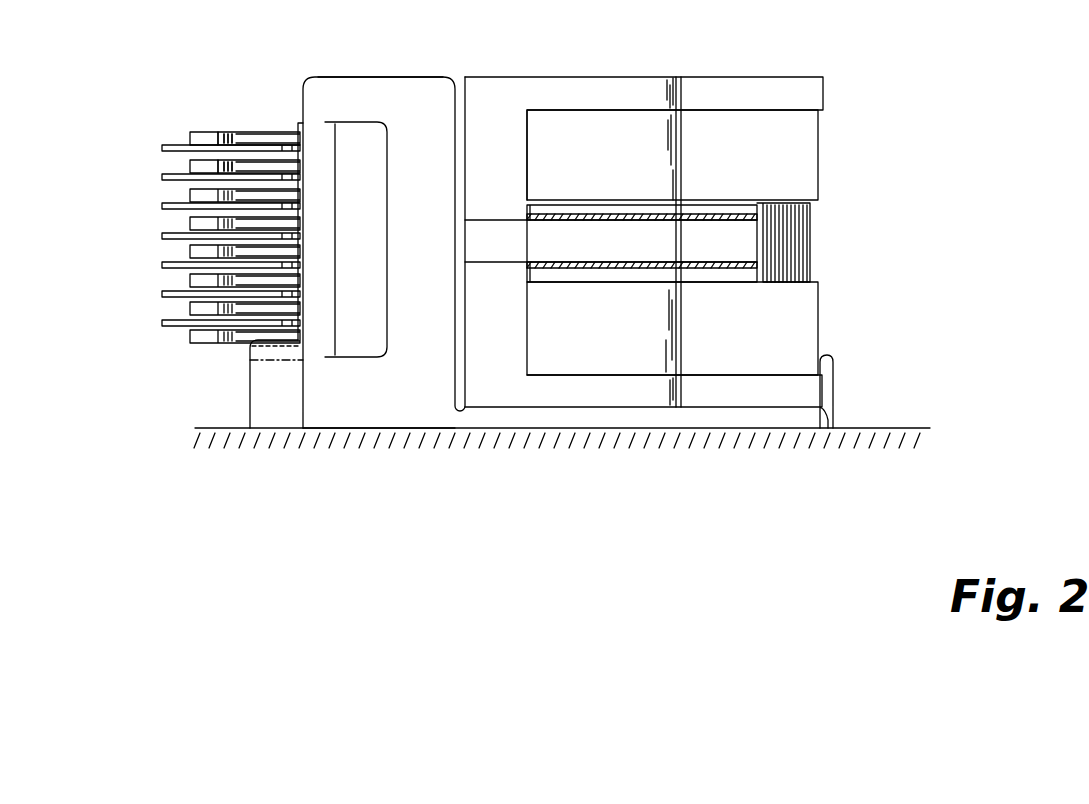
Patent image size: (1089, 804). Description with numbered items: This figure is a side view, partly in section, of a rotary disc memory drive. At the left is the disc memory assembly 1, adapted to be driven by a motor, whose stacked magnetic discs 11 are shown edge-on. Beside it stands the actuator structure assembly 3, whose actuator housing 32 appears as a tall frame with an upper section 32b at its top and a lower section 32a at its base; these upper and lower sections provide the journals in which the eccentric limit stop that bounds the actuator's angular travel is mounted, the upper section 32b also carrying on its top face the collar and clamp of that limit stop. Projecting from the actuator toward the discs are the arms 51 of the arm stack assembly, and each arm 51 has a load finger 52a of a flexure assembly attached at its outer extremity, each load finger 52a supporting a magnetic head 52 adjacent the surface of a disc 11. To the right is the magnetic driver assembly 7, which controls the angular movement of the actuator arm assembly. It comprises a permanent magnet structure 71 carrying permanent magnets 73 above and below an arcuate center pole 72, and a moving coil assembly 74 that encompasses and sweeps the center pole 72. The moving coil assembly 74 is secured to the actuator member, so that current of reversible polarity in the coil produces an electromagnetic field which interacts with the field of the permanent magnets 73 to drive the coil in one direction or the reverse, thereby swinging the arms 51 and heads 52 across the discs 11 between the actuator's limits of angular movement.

The disc memory assembly 1 is at (178, 199).
The actuator structure assembly 3 is at (379, 279).
The magnetic driver assembly 7 is at (682, 279).
The disc 11 is at (160, 265).
The actuator housing 32 is at (435, 110).
The lower section of actuator housing 32a is at (392, 428).
The upper section of actuator housing 32b is at (418, 76).
The arm 51 is at (187, 137).
The magnetic head 52 is at (263, 157).
The load finger 52a is at (205, 157).
The permanent magnet structure 71 is at (562, 77).
The arcuate center pole 72 is at (663, 240).
The permanent magnets 73 is at (808, 138).
The moving coil assembly 74 is at (817, 235).